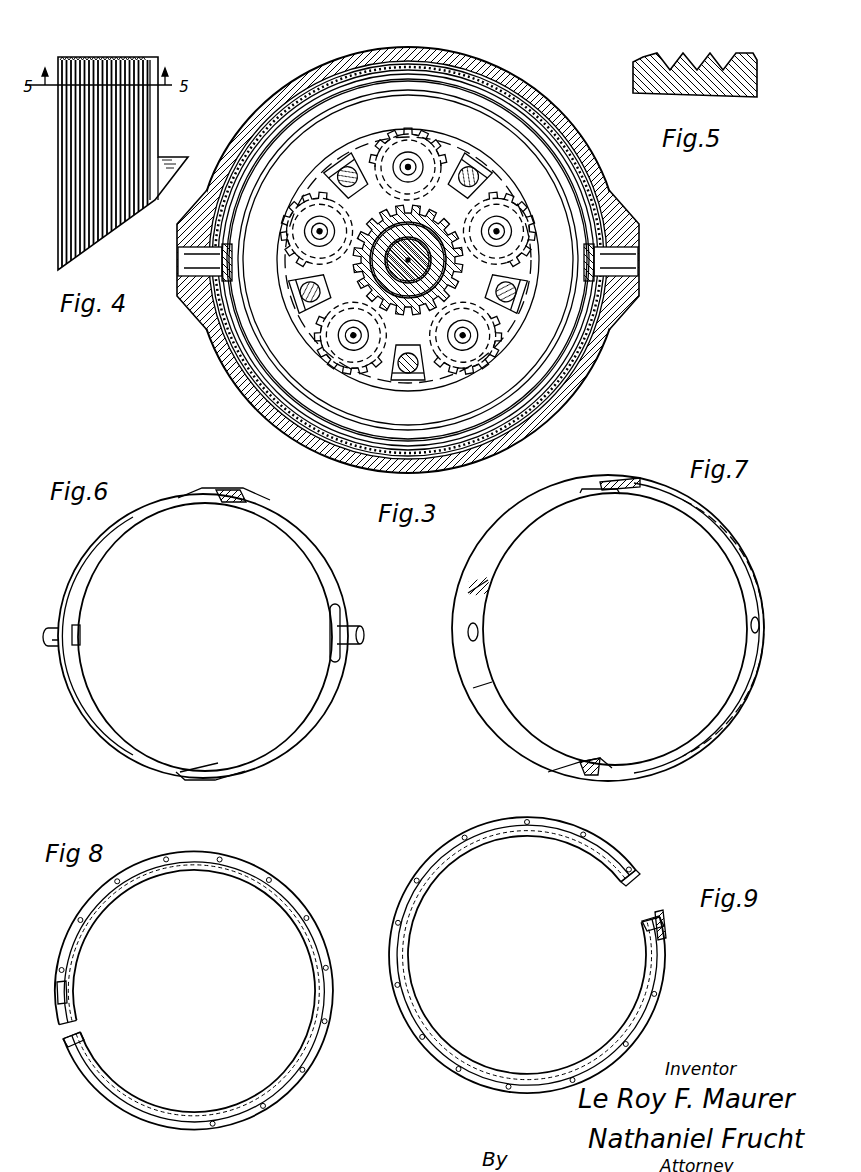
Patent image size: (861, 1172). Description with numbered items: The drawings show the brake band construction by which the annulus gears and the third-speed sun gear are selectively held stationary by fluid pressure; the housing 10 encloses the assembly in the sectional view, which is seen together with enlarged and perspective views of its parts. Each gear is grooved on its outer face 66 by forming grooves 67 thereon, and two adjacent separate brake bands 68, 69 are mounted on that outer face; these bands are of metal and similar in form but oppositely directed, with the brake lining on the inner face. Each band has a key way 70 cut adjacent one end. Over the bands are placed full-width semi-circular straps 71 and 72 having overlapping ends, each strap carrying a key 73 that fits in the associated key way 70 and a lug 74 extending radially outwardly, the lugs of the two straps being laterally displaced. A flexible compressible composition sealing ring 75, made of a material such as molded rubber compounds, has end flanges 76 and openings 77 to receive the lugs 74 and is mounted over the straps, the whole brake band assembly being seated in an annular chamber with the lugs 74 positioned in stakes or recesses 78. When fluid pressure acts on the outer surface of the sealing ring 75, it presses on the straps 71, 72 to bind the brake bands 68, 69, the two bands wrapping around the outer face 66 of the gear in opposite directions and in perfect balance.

In FIG. 3, the housing 10 is at (408, 260).
In FIG. 4, the outer face 66 is at (103, 57).
In FIG. 4, the grooves 67 is at (143, 57).
In FIG. 5, the grooves 67 is at (693, 57).
In FIG. 8, the brake band 68 is at (293, 893).
In FIG. 3, the brake band 69 is at (408, 260).
In FIG. 9, the brake band 69 is at (437, 856).
In FIG. 8, the key way 70 is at (57, 995).
In FIG. 9, the key way 70 is at (662, 932).
In FIG. 3, the semi-circular strap 71 is at (408, 260).
In FIG. 6, the semi-circular strap 71 is at (80, 562).
In FIG. 3, the semi-circular strap 72 is at (408, 260).
In FIG. 6, the semi-circular strap 72 is at (110, 737).
In FIG. 3, the key 73 is at (408, 262).
In FIG. 6, the key 73 is at (88, 635).
In FIG. 6, the lug 74 is at (54, 630).
In FIG. 3, the sealing ring 75 is at (408, 252).
In FIG. 7, the sealing ring 75 is at (490, 722).
In FIG. 7, the end flanges 76 is at (727, 550).
In FIG. 7, the openings 77 is at (479, 629).
In FIG. 3, the recesses 78 is at (412, 260).